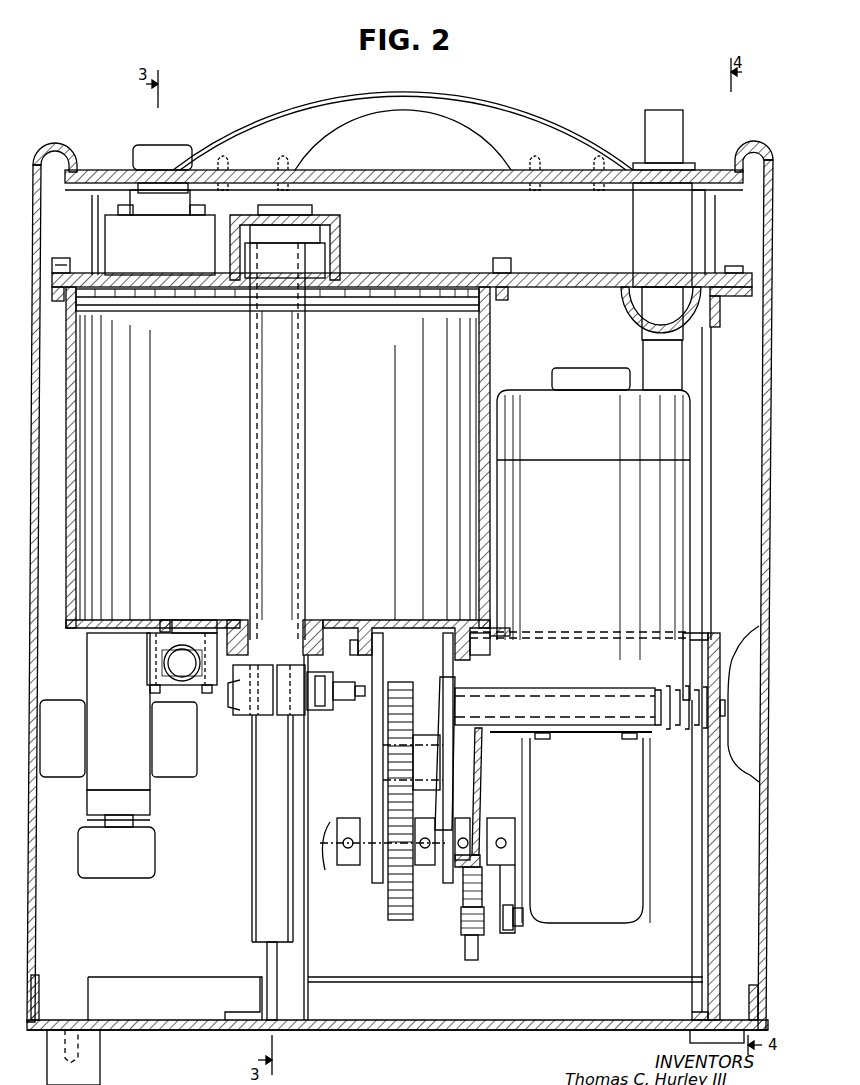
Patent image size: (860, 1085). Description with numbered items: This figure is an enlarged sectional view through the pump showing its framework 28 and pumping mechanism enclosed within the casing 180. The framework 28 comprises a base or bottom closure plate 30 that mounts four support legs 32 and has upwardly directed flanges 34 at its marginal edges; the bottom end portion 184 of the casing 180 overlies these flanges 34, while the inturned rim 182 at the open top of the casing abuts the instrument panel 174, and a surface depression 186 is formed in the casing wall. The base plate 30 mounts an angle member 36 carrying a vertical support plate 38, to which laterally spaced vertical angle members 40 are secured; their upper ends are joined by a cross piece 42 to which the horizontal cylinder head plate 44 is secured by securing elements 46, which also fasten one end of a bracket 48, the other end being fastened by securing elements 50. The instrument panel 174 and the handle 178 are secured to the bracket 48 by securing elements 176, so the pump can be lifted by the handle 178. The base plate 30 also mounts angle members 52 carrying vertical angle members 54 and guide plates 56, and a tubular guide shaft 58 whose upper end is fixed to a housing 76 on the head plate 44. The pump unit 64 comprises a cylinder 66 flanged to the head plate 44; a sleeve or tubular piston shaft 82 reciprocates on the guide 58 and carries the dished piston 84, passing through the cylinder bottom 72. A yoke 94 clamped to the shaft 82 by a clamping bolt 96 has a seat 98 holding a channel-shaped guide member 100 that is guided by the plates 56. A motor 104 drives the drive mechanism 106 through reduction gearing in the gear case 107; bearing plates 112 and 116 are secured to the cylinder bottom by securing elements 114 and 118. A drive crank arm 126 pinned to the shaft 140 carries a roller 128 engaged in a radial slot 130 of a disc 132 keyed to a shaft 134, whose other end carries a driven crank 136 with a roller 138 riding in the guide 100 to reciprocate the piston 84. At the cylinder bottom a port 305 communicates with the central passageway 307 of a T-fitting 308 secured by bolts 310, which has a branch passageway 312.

The framework 28 is at (430, 1032).
The base or bottom closure plate 30 is at (472, 1030).
The support legs 32 is at (85, 1075).
The upwardly directed flanges 34 is at (97, 980).
The angle member 36 is at (702, 998).
The support plate 38 is at (720, 845).
The angle members 40 is at (712, 478).
The angle member or cross piece 42 is at (720, 312).
The cylinder head plate 44 is at (550, 280).
The securing elements 46 is at (733, 264).
The bracket 48 is at (458, 186).
The securing elements 50 is at (64, 258).
The angle members 52 is at (262, 995).
The angle member 54 is at (277, 957).
The guide plate 56 is at (308, 968).
The tubular guide shaft 58 is at (258, 860).
The pump unit 64 is at (493, 346).
The cylinder 66 is at (68, 610).
The bottom of the cylinder 72 is at (368, 622).
The housing 76 is at (333, 248).
The sleeve or tubular piston shaft 82 is at (308, 412).
The piston 84 is at (203, 315).
The collar or yoke 94 is at (250, 728).
The clamping bolt 96 is at (236, 696).
The recess or seat 98 is at (300, 676).
The channel shaped horizontal guide member 100 is at (326, 711).
The motor 104 is at (580, 514).
The drive mechanism 106 is at (428, 912).
The gear case 107 is at (571, 827).
The bearing plate 112 is at (454, 678).
The securing elements 114 is at (478, 654).
The second bearing plate 116 is at (382, 660).
The securing elements 118 is at (354, 638).
The drive crank arm 126 is at (500, 905).
The roller 128 is at (480, 935).
The radial slot 130 is at (466, 946).
The disc 132 is at (482, 785).
The shaft 134 is at (464, 862).
The driven crank 136 is at (325, 848).
The roller 138 is at (322, 680).
The shaft 140 is at (516, 820).
The instrument panel 174 is at (103, 163).
The securing elements 176 is at (565, 185).
The handle 178 is at (498, 112).
The casing or housing 180 is at (760, 156).
The inturned rim 182 is at (740, 170).
The bottom end portion 184 is at (28, 1028).
The surface depression 186 is at (746, 790).
The port 305 is at (166, 620).
The central passageway 307 is at (197, 622).
The T-fitting 308 is at (144, 661).
The bolts 310 is at (204, 693).
The passageway or branch 312 is at (165, 672).